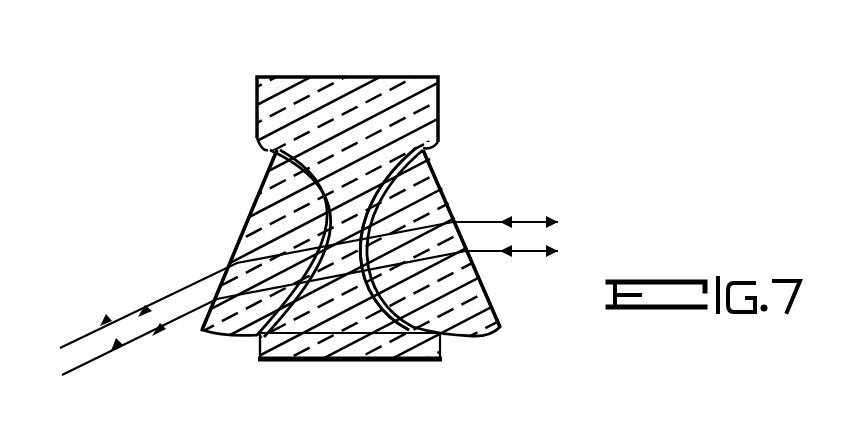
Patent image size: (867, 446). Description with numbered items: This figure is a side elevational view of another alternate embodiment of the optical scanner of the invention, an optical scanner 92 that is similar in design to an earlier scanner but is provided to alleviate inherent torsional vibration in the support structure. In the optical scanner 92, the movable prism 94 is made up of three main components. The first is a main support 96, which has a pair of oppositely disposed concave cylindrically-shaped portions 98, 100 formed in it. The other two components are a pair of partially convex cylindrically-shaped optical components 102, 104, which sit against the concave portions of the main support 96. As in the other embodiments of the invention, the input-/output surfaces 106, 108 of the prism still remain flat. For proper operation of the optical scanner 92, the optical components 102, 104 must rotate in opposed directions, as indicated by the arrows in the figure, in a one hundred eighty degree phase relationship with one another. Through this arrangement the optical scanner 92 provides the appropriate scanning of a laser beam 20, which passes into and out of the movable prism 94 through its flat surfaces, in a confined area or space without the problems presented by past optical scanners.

The laser beam 20 is at (86, 356).
The optical scanner 92 is at (413, 375).
The movable prism 94 is at (253, 362).
The main support 96 is at (357, 350).
The concave cylindrically-shaped portion 98 is at (428, 147).
The concave cylindrically-shaped portion 100 is at (276, 148).
The partially convex cylindrically-shaped optical component 102 is at (430, 210).
The partially convex cylindrically-shaped optical component 104 is at (253, 252).
The input-/output surface 106 is at (490, 297).
The input-/output surface 108 is at (265, 184).